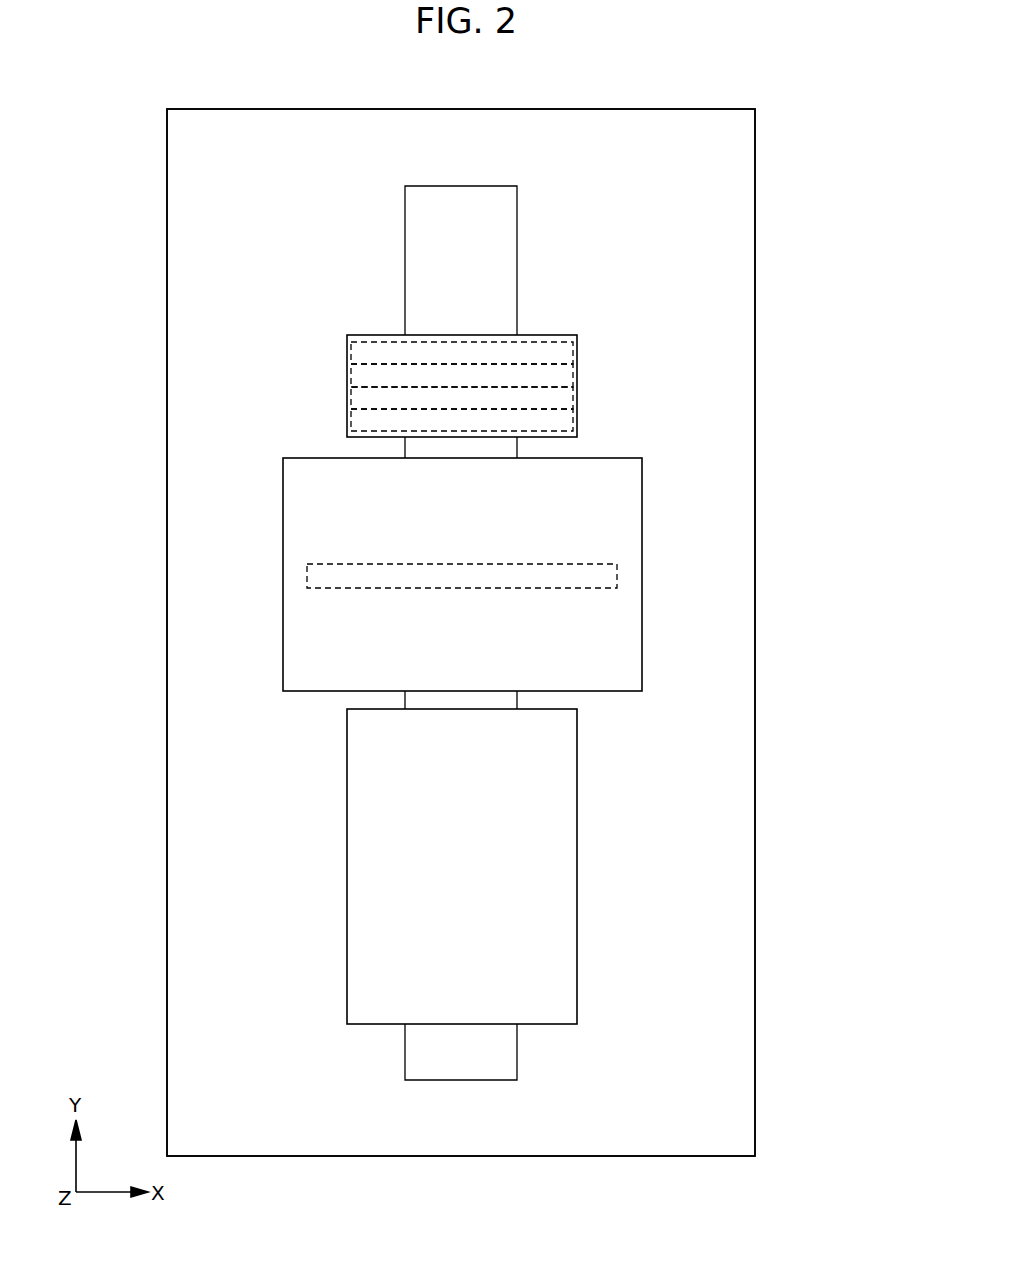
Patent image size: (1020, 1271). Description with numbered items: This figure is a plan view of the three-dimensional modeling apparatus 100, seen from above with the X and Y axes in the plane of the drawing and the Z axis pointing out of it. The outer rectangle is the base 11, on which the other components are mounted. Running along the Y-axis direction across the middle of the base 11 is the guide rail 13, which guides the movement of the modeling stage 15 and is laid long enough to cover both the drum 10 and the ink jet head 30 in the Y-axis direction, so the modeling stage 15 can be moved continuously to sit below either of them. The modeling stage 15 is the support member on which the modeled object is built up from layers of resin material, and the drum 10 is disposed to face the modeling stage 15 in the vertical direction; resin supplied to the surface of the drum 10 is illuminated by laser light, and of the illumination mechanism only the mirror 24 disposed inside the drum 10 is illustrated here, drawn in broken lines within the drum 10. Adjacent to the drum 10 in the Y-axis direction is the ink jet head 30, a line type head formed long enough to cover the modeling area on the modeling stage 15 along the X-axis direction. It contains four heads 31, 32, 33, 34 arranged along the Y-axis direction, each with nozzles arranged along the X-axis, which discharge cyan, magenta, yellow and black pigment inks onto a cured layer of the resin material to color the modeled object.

The 3D modeling apparatus 100 is at (376, 86).
The base 11 is at (740, 238).
The guide rail 13 is at (505, 1060).
The ink jet head 30 is at (578, 390).
The head 34 is at (350, 353).
The head 33 is at (350, 378).
The head 32 is at (350, 402).
The head 31 is at (350, 426).
The drum 10 is at (625, 653).
The mirror 24 is at (618, 573).
The modeling stage 15 is at (552, 930).